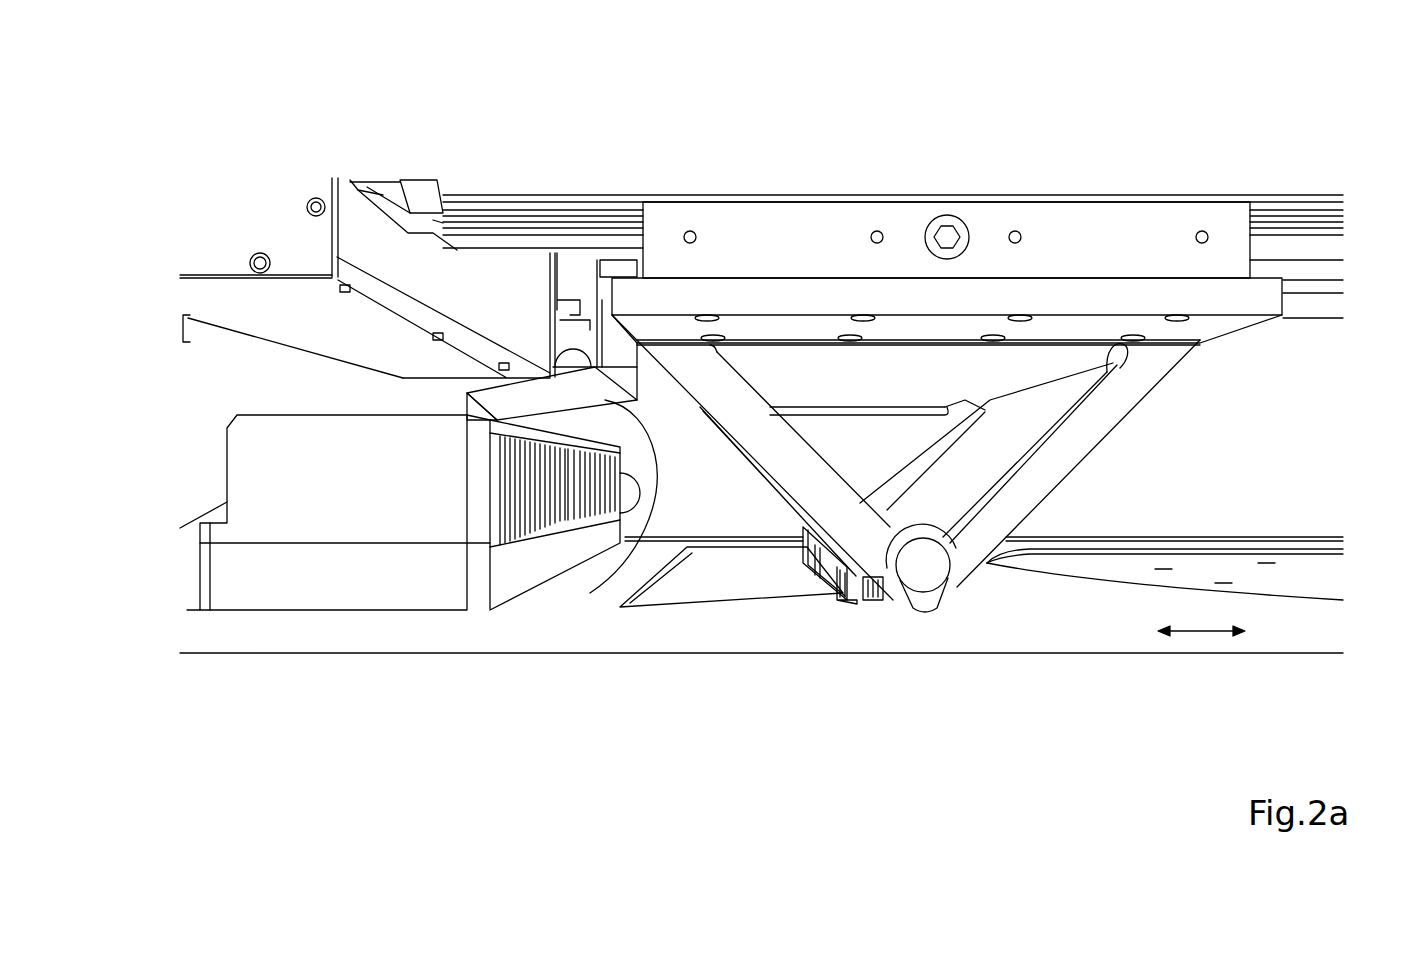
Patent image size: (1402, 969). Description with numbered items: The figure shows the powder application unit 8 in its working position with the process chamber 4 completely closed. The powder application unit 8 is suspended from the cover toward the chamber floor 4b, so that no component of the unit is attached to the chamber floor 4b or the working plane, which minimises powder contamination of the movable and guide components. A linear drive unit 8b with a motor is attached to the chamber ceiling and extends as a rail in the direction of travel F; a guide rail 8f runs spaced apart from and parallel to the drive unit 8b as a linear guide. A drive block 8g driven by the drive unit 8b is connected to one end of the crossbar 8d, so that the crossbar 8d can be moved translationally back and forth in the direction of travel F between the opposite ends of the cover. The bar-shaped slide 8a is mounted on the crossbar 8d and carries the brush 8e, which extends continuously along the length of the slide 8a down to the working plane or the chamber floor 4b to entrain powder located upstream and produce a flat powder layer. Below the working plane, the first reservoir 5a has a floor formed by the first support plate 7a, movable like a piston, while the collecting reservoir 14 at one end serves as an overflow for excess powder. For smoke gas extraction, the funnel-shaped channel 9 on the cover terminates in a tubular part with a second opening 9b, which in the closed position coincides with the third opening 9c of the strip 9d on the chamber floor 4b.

The process chamber 4 is at (1306, 351).
The chamber floor 4b is at (1085, 630).
The first reservoir 5a is at (1299, 573).
The first support plate 7a is at (1325, 574).
The powder application unit 8 is at (650, 175).
The slide 8a is at (855, 600).
The drive unit 8b is at (499, 186).
The crossbar 8d is at (1110, 412).
The brush 8e is at (877, 618).
The guide rail 8f is at (572, 294).
The drive block 8g is at (1092, 238).
The channel 9 is at (590, 593).
The second opening 9b is at (457, 407).
The third opening 9c is at (552, 393).
The strip 9d is at (323, 580).
The collecting reservoir 14 is at (668, 590).
The direction of travel F is at (1193, 640).